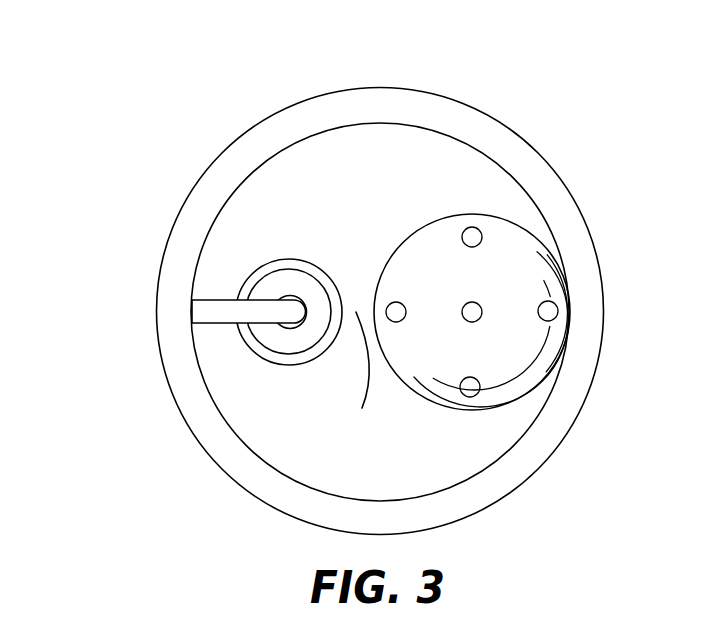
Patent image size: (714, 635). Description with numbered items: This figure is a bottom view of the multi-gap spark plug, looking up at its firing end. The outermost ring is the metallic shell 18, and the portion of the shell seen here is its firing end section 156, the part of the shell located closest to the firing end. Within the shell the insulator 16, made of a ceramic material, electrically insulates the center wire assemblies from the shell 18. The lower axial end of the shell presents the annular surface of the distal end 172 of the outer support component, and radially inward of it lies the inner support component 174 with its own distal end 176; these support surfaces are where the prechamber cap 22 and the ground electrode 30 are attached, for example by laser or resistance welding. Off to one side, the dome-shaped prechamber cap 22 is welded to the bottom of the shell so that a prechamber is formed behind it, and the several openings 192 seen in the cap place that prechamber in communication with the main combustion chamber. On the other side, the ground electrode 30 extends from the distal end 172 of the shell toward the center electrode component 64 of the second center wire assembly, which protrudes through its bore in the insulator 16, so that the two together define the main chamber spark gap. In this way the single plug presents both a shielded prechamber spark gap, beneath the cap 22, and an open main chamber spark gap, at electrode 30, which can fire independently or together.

The insulator 16 is at (283, 342).
The metallic shell 18 is at (580, 282).
The prechamber cap 22 is at (503, 272).
The ground electrode 30 is at (210, 315).
The center electrode component 64 is at (290, 293).
The firing end section 156 is at (392, 286).
The distal end 172 is at (212, 353).
The inner support component 174 is at (338, 377).
The distal end 176 is at (338, 377).
The openings 192 is at (480, 387).